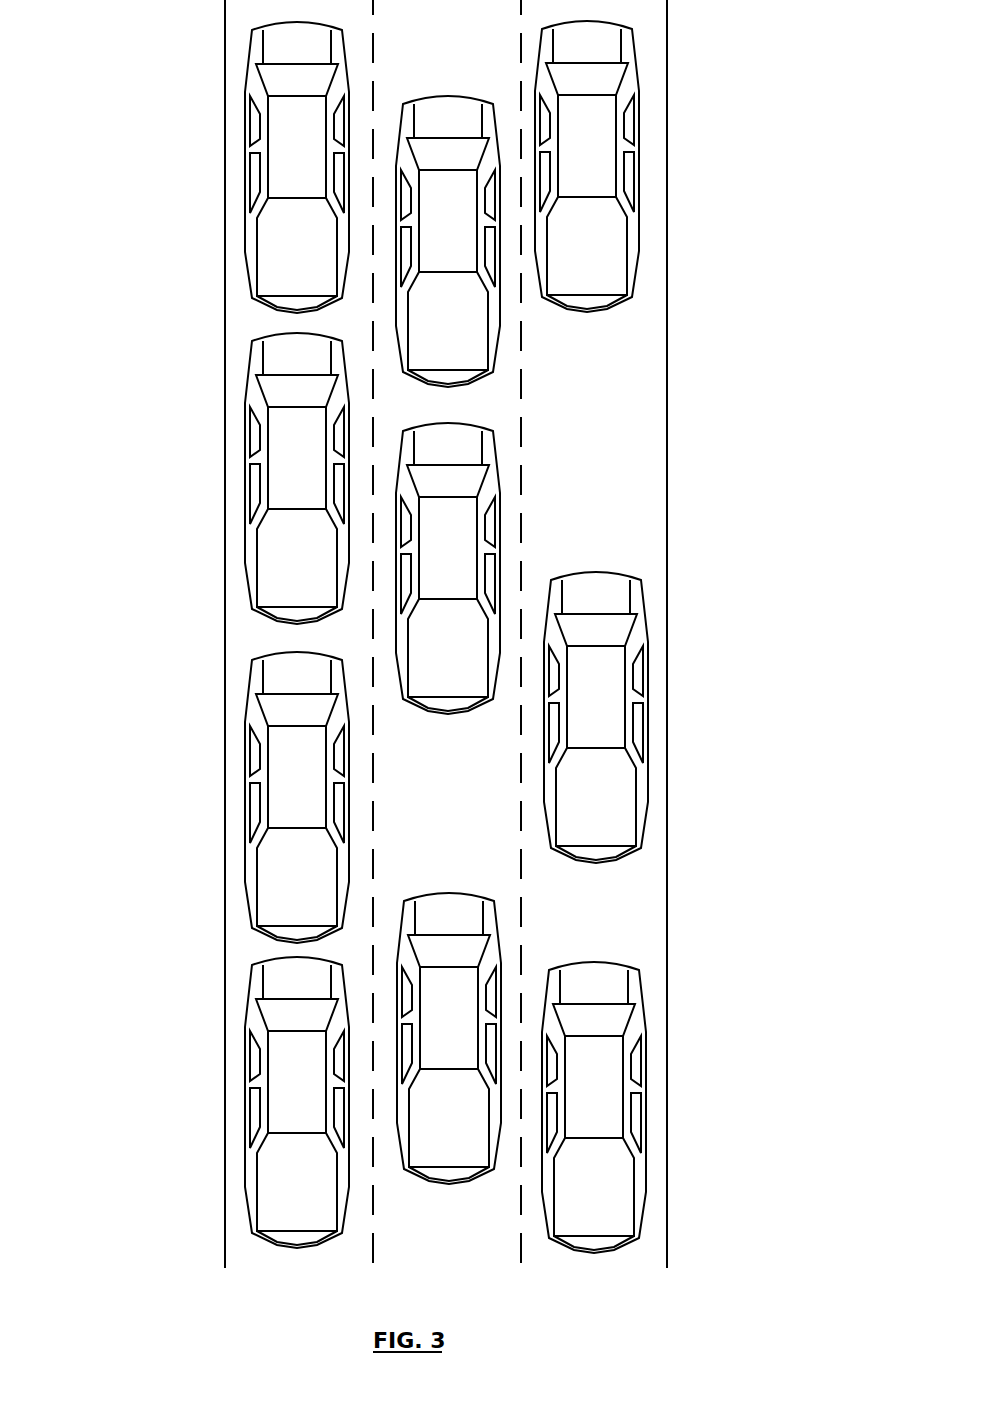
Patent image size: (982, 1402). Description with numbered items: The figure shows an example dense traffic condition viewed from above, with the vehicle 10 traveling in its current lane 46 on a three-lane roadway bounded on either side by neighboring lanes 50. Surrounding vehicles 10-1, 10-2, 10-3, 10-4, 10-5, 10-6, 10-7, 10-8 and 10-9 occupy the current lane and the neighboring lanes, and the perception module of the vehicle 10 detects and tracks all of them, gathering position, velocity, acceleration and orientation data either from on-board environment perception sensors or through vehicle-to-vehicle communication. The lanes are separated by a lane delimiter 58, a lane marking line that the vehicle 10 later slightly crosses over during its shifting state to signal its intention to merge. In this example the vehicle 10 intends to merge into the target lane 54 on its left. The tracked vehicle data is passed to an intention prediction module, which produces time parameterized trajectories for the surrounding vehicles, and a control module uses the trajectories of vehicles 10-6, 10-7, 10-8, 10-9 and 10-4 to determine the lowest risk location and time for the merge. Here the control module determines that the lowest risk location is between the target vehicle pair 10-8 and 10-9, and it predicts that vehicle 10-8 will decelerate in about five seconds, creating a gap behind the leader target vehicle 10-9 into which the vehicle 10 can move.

The vehicle 10 is at (476, 544).
The surrounding vehicle 10-1 is at (260, 1085).
The surrounding vehicle 10-2 is at (450, 1017).
The surrounding vehicle 10-3 is at (628, 1083).
The surrounding vehicle 10-4 is at (599, 695).
The surrounding vehicle 10-5 is at (616, 142).
The surrounding vehicle 10-6 is at (452, 220).
The surrounding vehicle 10-7 is at (268, 145).
The target vehicle 10-8 is at (296, 456).
The leader target vehicle 10-9 is at (262, 774).
The current lane 46 is at (435, 795).
The neighboring lane 50 is at (253, 309).
The target lane 54 is at (248, 938).
The lane delimiter 58 is at (369, 643).